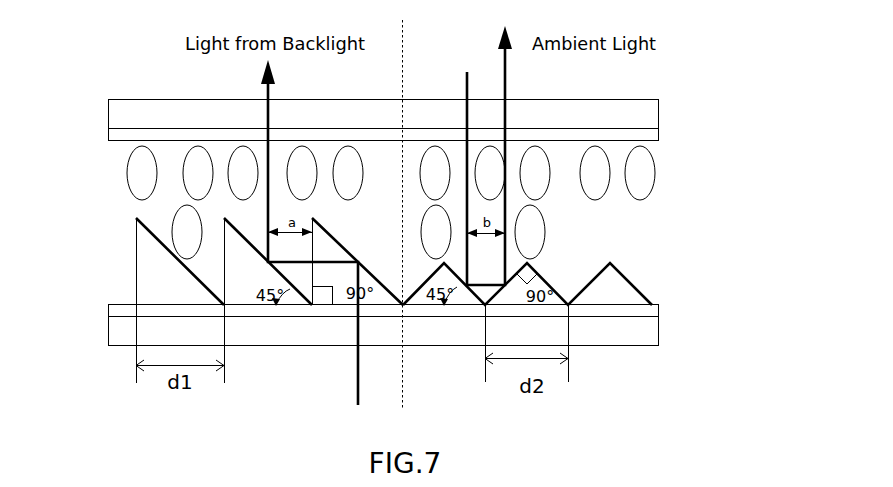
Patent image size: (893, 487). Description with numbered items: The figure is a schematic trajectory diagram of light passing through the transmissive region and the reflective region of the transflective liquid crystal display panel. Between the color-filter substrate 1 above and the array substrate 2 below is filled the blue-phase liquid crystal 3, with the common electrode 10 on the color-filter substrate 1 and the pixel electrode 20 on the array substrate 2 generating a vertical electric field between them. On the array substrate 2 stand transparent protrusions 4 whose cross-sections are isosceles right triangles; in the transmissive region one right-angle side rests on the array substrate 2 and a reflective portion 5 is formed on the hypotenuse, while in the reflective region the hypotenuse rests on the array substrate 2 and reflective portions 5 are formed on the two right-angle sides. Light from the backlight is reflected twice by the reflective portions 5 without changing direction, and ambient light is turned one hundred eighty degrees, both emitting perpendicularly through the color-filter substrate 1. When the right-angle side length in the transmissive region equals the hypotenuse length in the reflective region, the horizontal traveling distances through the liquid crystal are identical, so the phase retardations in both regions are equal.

The color-filter substrate 1 is at (659, 111).
The common electrode 10 is at (659, 137).
The blue-phase liquid crystal 3 is at (655, 175).
The transparent protrusions 4 is at (142, 271).
The reflective portions 5 is at (617, 273).
The pixel electrode 20 is at (659, 316).
The array substrate 2 is at (659, 340).